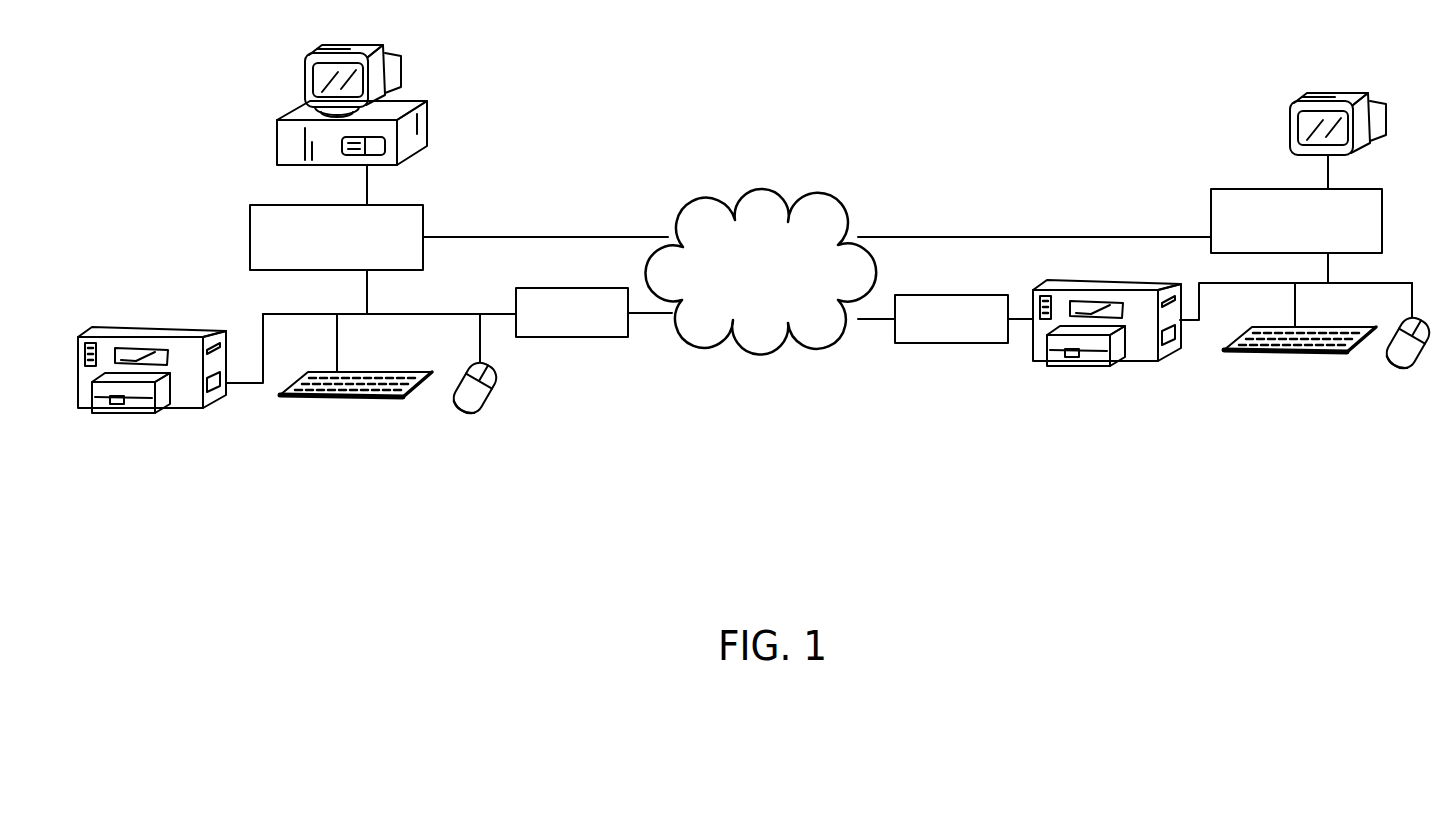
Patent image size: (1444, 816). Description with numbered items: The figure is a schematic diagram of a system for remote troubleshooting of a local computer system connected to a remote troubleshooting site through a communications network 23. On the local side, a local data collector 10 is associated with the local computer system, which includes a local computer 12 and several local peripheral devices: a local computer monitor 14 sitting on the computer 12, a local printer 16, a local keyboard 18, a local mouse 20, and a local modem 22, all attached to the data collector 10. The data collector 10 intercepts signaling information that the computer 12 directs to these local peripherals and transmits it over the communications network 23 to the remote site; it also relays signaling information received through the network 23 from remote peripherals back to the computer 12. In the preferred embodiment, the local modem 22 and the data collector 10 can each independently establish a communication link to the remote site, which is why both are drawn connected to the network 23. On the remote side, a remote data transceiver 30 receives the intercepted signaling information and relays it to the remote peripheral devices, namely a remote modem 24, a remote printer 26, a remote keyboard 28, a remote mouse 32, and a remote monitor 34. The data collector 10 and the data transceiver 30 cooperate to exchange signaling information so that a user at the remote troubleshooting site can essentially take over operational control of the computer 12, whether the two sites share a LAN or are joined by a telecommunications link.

The local data collector 10 is at (250, 237).
The local computer 12 is at (432, 128).
The local computer monitor 14 is at (400, 73).
The local printer 16 is at (116, 329).
The local keyboard 18 is at (350, 398).
The local mouse 20 is at (478, 415).
The local modem 22 is at (595, 338).
The communications network 23 is at (828, 208).
The remote modem 24 is at (920, 344).
The remote printer 26 is at (1135, 366).
The remote keyboard 28 is at (1298, 352).
The remote data transceiver 30 is at (1383, 222).
The remote mouse 32 is at (1400, 372).
The remote monitor 34 is at (1386, 125).